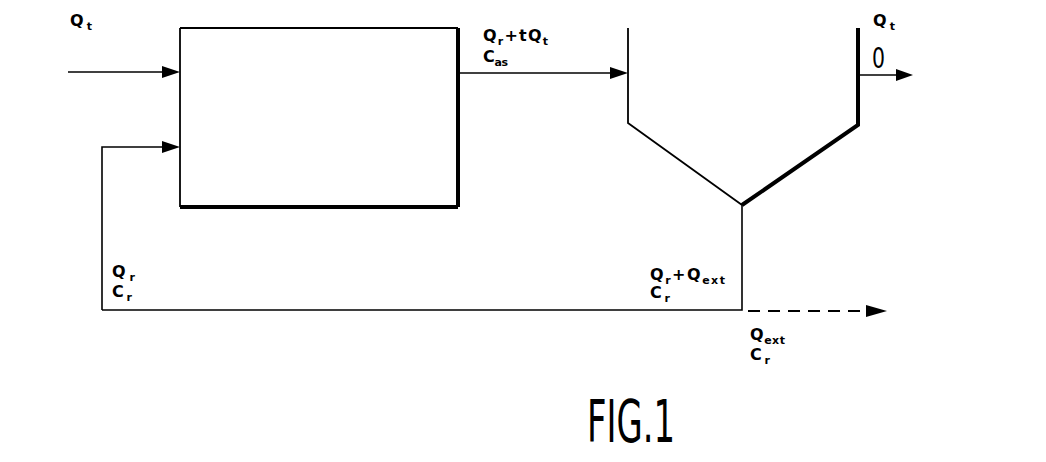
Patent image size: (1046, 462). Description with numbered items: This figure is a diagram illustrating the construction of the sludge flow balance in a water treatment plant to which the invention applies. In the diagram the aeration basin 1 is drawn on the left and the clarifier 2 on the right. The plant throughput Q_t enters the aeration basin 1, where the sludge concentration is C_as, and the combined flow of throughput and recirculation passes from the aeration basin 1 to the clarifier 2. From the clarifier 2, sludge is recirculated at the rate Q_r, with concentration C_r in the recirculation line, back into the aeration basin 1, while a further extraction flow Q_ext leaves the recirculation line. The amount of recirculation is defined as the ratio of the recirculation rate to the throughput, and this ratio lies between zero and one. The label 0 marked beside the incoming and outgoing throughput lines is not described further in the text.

The influent flow (zero recycle concentration reference) 0 is at (123, 60).
The aeration basin 1 is at (458, 163).
The clarifier 2 is at (802, 168).